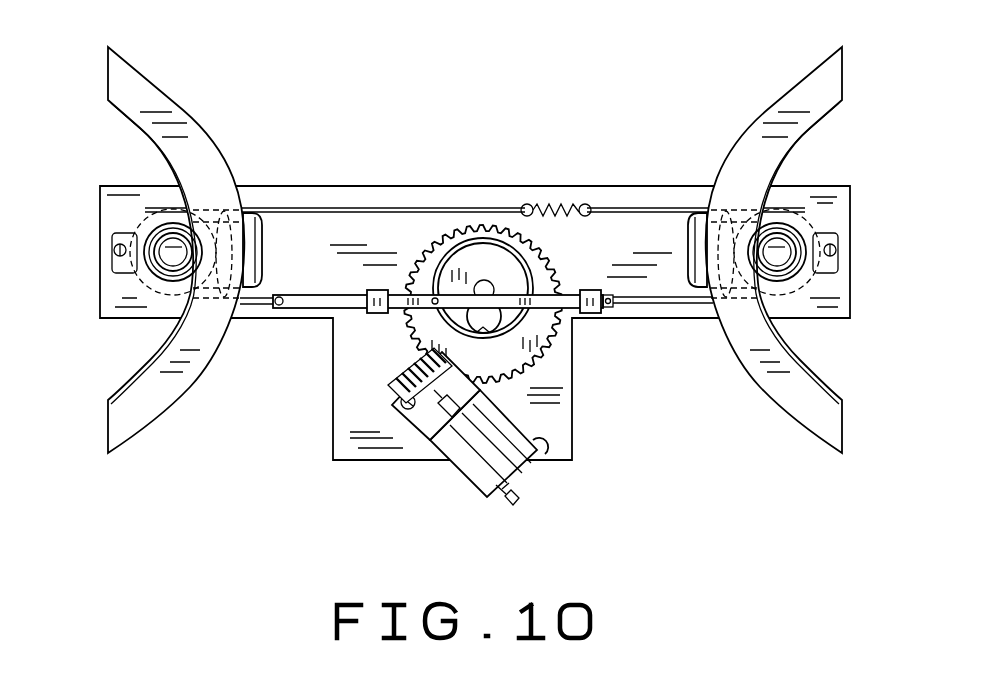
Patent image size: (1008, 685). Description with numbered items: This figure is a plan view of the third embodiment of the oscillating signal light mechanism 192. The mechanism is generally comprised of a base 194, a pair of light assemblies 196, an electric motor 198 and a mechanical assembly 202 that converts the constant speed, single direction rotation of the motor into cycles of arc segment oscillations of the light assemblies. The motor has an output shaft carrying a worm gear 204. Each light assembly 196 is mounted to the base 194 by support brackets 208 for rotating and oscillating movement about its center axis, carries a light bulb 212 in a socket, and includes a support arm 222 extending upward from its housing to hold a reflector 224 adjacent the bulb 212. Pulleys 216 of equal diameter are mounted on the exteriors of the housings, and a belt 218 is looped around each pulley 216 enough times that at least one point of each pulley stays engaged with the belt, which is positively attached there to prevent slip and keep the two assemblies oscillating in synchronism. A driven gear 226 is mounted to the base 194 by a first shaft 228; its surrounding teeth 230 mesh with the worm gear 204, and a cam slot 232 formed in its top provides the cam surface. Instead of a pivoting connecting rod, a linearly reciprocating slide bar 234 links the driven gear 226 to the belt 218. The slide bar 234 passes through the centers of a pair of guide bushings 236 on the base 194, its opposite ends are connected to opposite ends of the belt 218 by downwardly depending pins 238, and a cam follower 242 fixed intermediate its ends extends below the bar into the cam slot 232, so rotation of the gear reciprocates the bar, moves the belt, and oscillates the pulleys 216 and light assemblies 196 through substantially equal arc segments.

The oscillating signal light mechanism 192 is at (518, 86).
The base 194 is at (383, 453).
The light assemblies 196 is at (243, 133).
The electric motor 198 is at (462, 470).
The mechanical assembly 202 is at (310, 372).
The worm gear 204 is at (415, 333).
The support brackets 208 is at (142, 216).
The light bulbs 212 is at (177, 257).
The pulleys 216 is at (142, 273).
The belt 218 is at (370, 200).
The support arm 222 is at (263, 250).
The reflector 224 is at (148, 102).
The driven gear 226 is at (520, 360).
The first shaft 228 is at (476, 284).
The teeth 230 is at (561, 260).
The cam slot 232 is at (503, 240).
The slide bar 234 is at (337, 308).
The guide bushings 236 is at (376, 314).
The pins 238 is at (274, 308).
The cam follower 242 is at (392, 378).